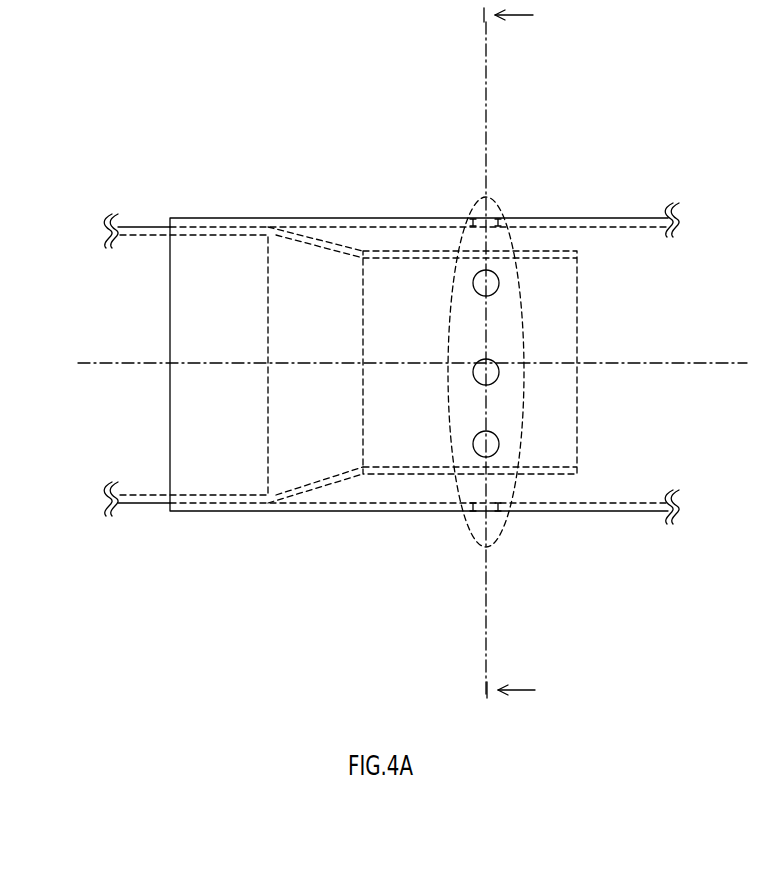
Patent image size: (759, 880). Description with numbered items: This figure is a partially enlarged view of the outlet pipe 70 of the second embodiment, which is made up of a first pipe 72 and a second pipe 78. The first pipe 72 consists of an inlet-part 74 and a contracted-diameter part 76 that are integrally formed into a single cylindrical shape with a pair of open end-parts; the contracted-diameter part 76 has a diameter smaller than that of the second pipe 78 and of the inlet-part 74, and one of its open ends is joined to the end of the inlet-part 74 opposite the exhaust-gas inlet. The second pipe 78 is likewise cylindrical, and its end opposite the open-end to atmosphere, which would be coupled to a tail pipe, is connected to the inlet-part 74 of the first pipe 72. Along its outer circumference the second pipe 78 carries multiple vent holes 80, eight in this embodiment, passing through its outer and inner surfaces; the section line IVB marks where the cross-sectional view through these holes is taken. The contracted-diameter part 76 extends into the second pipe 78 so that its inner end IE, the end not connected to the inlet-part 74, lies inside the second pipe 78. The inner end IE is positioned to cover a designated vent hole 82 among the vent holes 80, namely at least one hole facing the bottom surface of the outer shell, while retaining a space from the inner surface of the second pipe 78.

The outlet pipe 70 is at (242, 153).
The first pipe 72 is at (348, 465).
The inlet-part 74 is at (220, 511).
The contracted-diameter part 76 is at (390, 483).
The second pipe 78 is at (414, 218).
The vent holes 80 is at (505, 207).
The designated vent hole 82 is at (498, 518).
The inner end IE is at (577, 483).
The IVB-IVB section line IVB is at (532, 353).